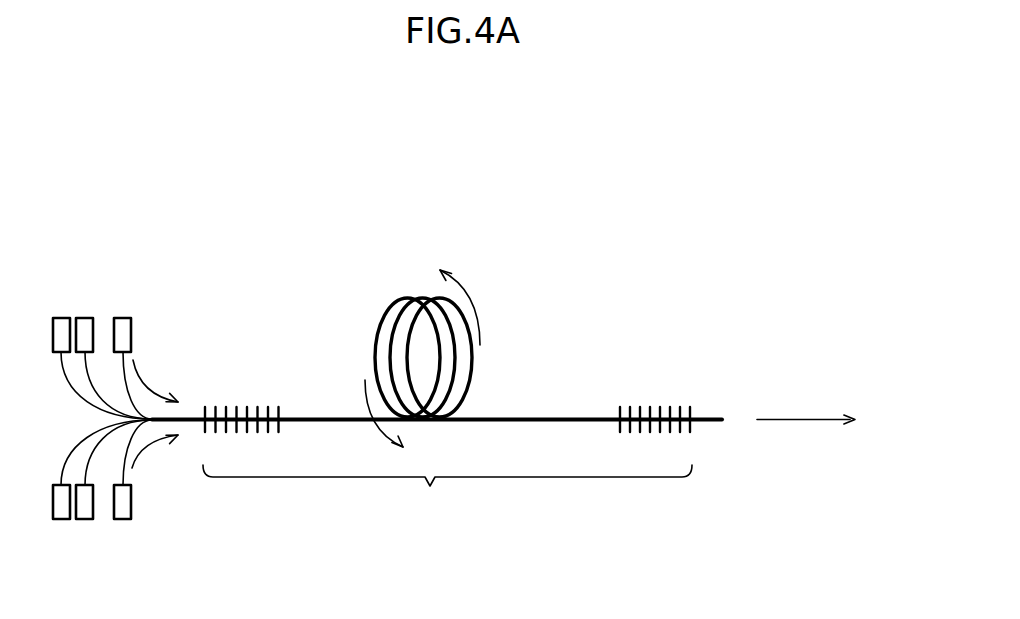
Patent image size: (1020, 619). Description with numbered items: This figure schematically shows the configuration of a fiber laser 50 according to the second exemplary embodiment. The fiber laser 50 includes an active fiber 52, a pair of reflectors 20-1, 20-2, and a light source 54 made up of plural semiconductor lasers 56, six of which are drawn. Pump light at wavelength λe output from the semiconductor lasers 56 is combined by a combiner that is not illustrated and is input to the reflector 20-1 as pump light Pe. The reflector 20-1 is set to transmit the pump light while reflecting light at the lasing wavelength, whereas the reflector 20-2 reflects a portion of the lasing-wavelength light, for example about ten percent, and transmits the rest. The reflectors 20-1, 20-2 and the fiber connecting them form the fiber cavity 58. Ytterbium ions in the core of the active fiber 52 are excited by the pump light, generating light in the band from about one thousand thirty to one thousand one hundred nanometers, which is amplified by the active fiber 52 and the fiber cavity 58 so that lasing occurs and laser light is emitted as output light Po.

The fiber laser 50 is at (570, 275).
The active fiber 52 is at (400, 272).
The light source 54 is at (123, 214).
The semiconductor laser 56 is at (62, 318).
The fiber cavity 58 is at (447, 494).
The reflector 20-1 is at (242, 402).
The reflector 20-2 is at (655, 402).